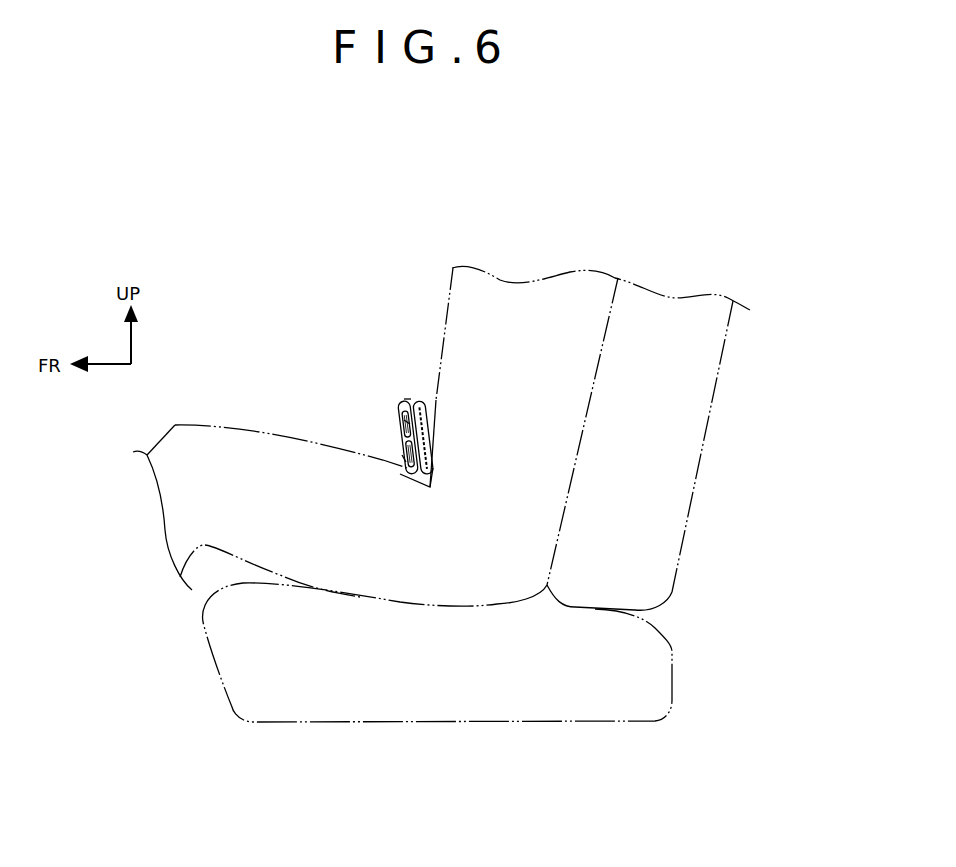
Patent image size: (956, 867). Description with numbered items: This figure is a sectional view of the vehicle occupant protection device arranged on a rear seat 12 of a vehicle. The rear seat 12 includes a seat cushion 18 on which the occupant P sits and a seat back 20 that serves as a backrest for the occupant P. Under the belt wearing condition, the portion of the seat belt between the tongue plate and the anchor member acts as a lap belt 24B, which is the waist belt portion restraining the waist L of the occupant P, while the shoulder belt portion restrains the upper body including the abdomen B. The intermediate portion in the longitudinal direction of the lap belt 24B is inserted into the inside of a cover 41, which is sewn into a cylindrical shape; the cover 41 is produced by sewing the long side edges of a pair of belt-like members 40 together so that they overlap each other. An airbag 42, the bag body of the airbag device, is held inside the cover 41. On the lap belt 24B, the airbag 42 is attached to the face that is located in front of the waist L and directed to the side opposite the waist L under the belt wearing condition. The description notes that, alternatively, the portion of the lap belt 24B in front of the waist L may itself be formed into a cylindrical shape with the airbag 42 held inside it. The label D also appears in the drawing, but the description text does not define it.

The rear seat 12 is at (463, 493).
The seat cushion 18 is at (675, 672).
The seat back 20 is at (723, 350).
The lap belt 24B is at (445, 422).
The belt-like members 40 is at (405, 461).
The cover 41 is at (409, 399).
The airbag 42 is at (411, 423).
The occupant P is at (444, 294).
The abdomen B is at (513, 370).
The waist L is at (500, 527).
The distance D is at (333, 558).